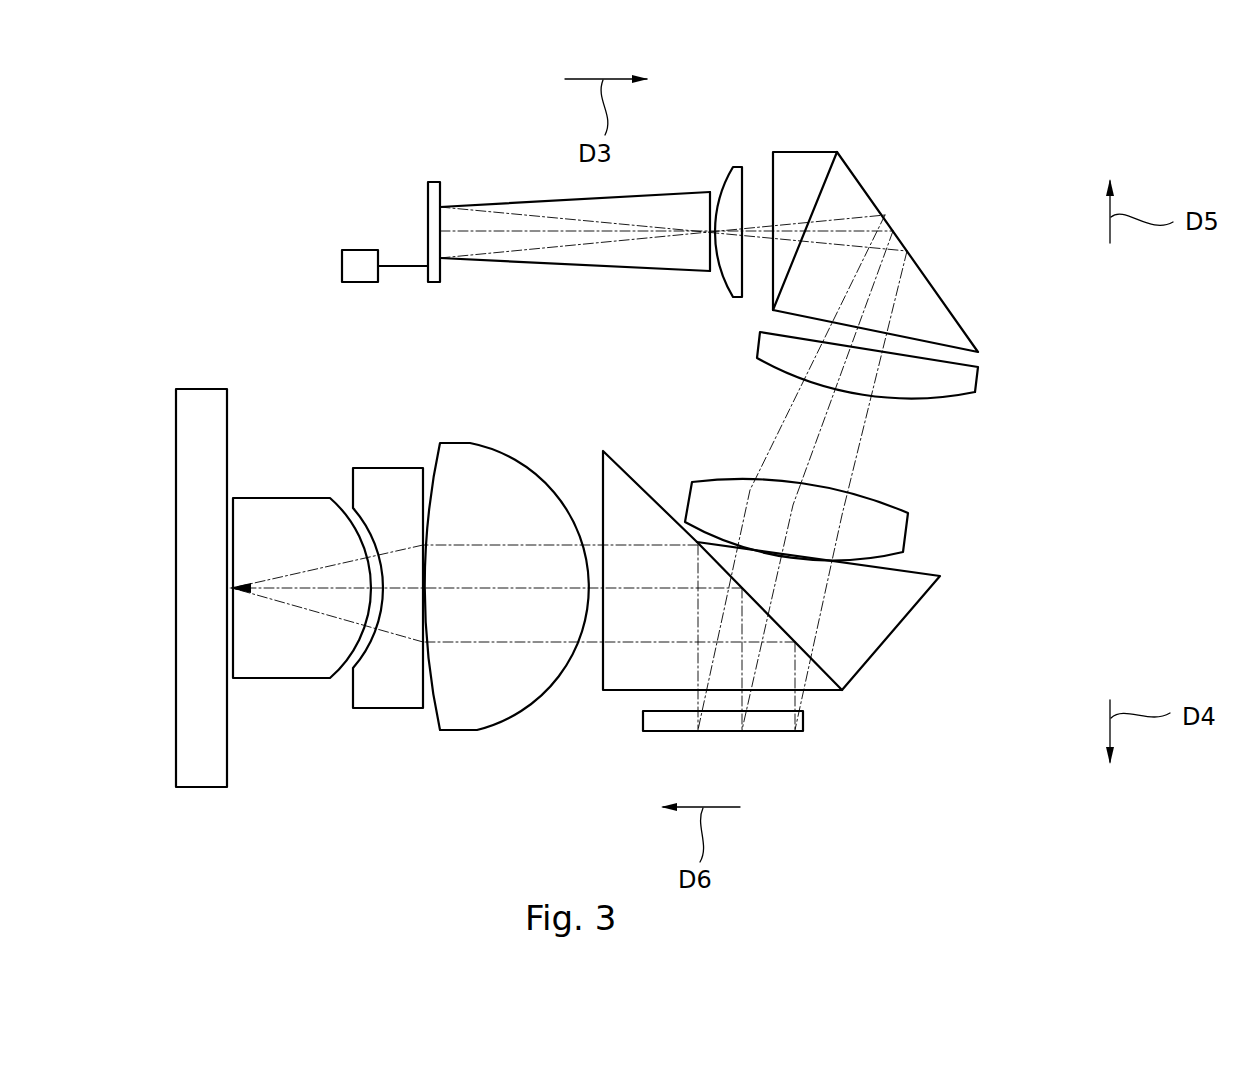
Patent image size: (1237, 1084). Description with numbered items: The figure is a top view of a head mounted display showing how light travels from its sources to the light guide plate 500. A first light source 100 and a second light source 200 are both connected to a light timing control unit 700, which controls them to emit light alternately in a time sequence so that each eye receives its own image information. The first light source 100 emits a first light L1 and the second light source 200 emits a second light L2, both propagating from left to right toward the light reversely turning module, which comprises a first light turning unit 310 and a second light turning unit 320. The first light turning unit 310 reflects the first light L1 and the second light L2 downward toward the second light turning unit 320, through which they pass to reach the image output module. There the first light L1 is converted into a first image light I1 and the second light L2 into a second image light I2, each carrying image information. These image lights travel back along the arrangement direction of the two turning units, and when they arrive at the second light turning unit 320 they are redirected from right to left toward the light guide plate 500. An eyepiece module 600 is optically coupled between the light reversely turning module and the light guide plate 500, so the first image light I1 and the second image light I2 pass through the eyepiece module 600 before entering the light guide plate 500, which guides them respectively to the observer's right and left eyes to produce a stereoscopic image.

The first light source 100 is at (344, 232).
The second light source 200 is at (432, 192).
The light timing control unit 700 is at (355, 266).
The first light L1 is at (591, 245).
The second light L2 is at (620, 240).
The first light turning unit 310 is at (933, 283).
The second light turning unit 320 is at (872, 615).
The first image light I1 is at (655, 714).
The second image light I2 is at (723, 721).
The light guide plate 500 is at (198, 398).
The eyepiece module 600 is at (388, 468).